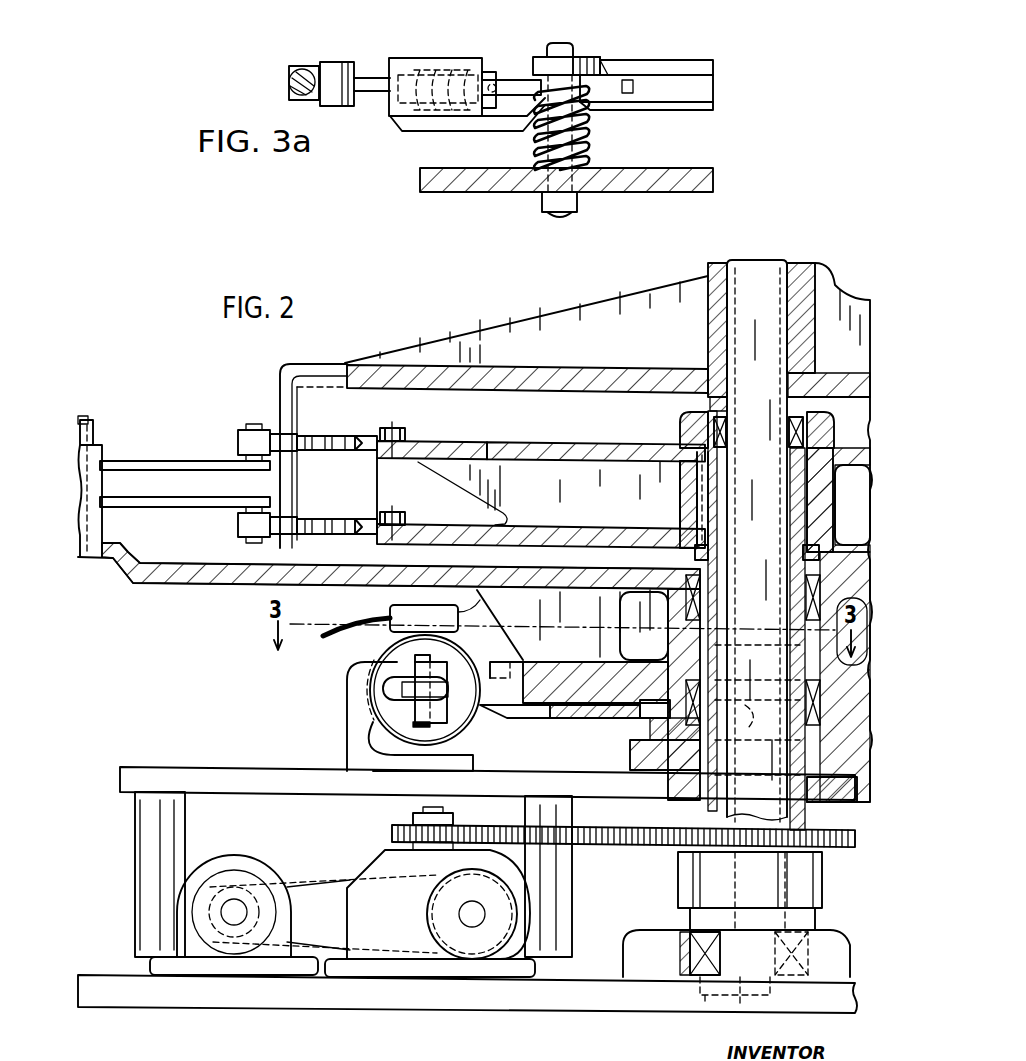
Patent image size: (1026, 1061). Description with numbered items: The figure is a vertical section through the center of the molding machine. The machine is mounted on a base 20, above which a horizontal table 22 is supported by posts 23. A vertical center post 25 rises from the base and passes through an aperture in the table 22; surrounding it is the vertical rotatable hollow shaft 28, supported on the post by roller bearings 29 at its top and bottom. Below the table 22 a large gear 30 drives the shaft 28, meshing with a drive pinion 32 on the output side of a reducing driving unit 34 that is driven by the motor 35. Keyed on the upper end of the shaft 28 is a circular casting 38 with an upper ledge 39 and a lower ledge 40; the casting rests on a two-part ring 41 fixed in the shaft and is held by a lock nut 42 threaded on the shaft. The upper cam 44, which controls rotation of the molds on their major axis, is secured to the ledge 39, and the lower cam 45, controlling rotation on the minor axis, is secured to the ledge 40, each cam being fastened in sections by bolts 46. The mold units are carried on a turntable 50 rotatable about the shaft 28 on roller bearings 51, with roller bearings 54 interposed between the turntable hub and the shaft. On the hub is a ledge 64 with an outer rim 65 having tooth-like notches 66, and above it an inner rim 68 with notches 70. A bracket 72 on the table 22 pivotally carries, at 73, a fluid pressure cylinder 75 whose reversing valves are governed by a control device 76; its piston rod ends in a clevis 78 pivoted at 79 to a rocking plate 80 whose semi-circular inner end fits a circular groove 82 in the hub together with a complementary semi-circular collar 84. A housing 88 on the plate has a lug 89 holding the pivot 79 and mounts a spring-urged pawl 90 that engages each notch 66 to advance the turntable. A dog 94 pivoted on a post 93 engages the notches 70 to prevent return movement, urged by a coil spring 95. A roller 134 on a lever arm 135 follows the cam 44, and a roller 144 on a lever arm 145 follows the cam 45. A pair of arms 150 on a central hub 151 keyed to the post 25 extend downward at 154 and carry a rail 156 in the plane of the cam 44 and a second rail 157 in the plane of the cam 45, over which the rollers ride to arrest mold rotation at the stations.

In FIG. 2, the base 20 is at (672, 987).
In FIG. 3a, the horizontal table 22 is at (440, 185).
In FIG. 2, the horizontal table 22 is at (285, 790).
In FIG. 2, the posts 23 is at (150, 836).
In FIG. 2, the vertical center post 25 is at (767, 272).
In FIG. 2, the vertical rotatable sleeve or hollow shaft 28 is at (806, 516).
In FIG. 2, the roller bearings 29 is at (712, 430).
In FIG. 2, the large gear 30 is at (814, 838).
In FIG. 2, the drive pinion 32 is at (460, 836).
In FIG. 2, the reducing driving unit 34 is at (486, 870).
In FIG. 2, the motor 35 is at (260, 882).
In FIG. 2, the circular casting 38 is at (585, 453).
In FIG. 2, the upper ledge 39 is at (430, 452).
In FIG. 2, the lower ledge 40 is at (425, 534).
In FIG. 2, the two-part ring 41 is at (819, 553).
In FIG. 2, the lock nut 42 is at (834, 444).
In FIG. 2, the upper cam 44 is at (364, 440).
In FIG. 2, the lower cam 45 is at (364, 535).
In FIG. 2, the bolts 46 is at (398, 434).
In FIG. 2, the turntable 50 is at (243, 583).
In FIG. 2, the roller bearings 51 is at (630, 758).
In FIG. 2, the roller bearings 54 is at (695, 556).
In FIG. 3a, the ledge 64 is at (708, 87).
In FIG. 2, the ledge 64 is at (522, 717).
In FIG. 2, the outer rim 65 is at (491, 692).
In FIG. 3a, the tooth-like notches 66 is at (496, 84).
In FIG. 3a, the inner rim 68 is at (538, 57).
In FIG. 3a, the notches 70 is at (612, 70).
In FIG. 2, the notches 70 is at (505, 662).
In FIG. 2, the bracket 72 is at (350, 712).
In FIG. 2, the pivot 73 is at (432, 660).
In FIG. 2, the fluid pressure cylinder 75 is at (462, 722).
In FIG. 2, the control device 76 is at (400, 608).
In FIG. 3a, the clevis 78 is at (314, 70).
In FIG. 3a, the pivot 79 is at (337, 62).
In FIG. 3a, the rocking plate 80 is at (412, 122).
In FIG. 2, the rocking plate 80 is at (582, 717).
In FIG. 2, the circular groove 82 is at (645, 716).
In FIG. 2, the semi-circular collar 84 is at (752, 724).
In FIG. 3a, the housing 88 is at (413, 62).
In FIG. 3a, the lug 89 is at (370, 82).
In FIG. 3a, the spring-urged pawl 90 is at (491, 72).
In FIG. 3a, the post 93 is at (572, 46).
In FIG. 3a, the dog 94 is at (595, 60).
In FIG. 3a, the coil spring 95 is at (588, 140).
In FIG. 2, the roller 134 is at (249, 430).
In FIG. 2, the lever arm 135 is at (158, 460).
In FIG. 2, the roller 144 is at (243, 530).
In FIG. 2, the lever arm 145 is at (190, 508).
In FIG. 2, the arms 150 is at (537, 334).
In FIG. 2, the central hub 151 is at (717, 270).
In FIG. 2, the downward extension 154 is at (293, 406).
In FIG. 2, the rail 156 is at (288, 450).
In FIG. 2, the second rail 157 is at (288, 522).